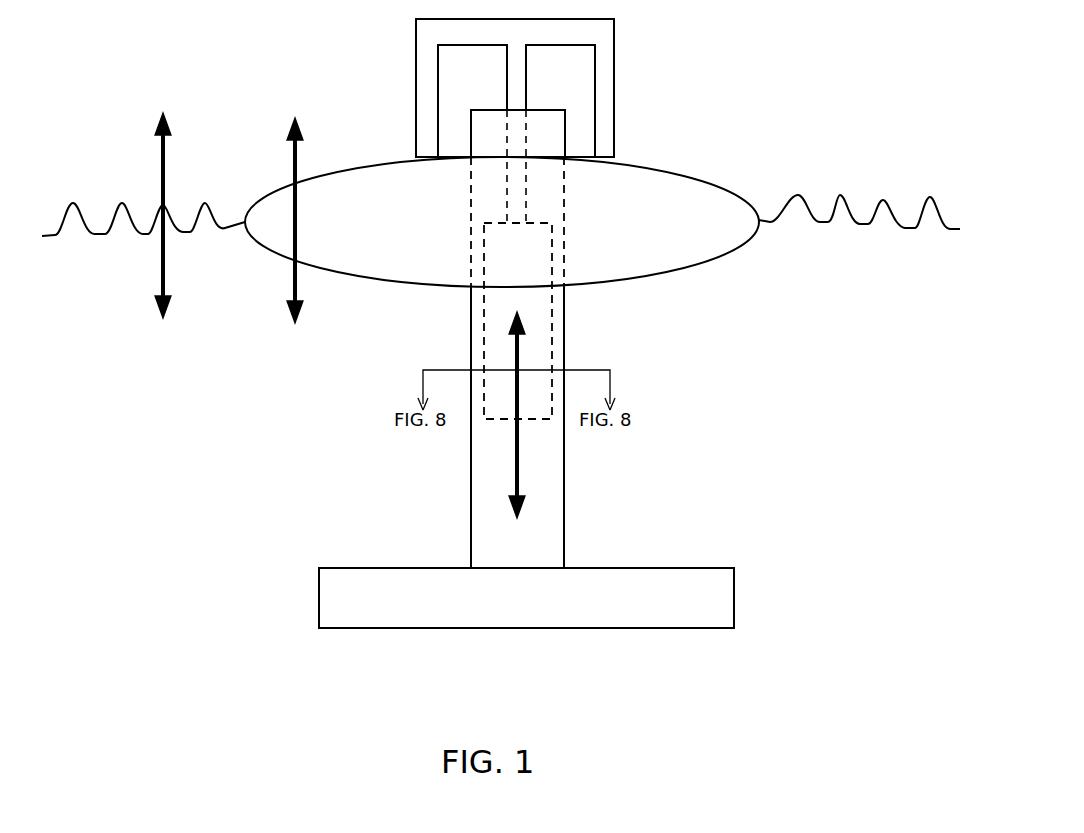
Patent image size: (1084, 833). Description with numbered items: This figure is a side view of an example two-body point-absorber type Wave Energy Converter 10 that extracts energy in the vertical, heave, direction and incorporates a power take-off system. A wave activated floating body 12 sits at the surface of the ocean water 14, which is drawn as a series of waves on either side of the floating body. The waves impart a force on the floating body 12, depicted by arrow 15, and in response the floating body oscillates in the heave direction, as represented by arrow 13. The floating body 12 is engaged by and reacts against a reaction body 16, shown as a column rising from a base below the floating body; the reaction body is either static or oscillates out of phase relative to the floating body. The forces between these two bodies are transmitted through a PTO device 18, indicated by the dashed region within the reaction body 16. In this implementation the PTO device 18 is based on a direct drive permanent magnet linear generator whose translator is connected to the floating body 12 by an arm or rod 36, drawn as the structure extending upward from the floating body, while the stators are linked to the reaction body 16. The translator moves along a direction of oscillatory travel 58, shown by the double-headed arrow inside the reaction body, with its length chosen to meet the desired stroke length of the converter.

The point-absorber type WEC 10 is at (652, 66).
The wave activated floating body 12 is at (690, 172).
The arrow representing heave oscillation 13 is at (298, 148).
The ocean water 14 is at (122, 202).
The arrow depicting force 15 is at (166, 152).
The reaction body 16 is at (566, 520).
The PTO device 18 is at (532, 315).
The arm or rod 36 is at (520, 89).
The direction of oscillatory travel 58 is at (514, 472).